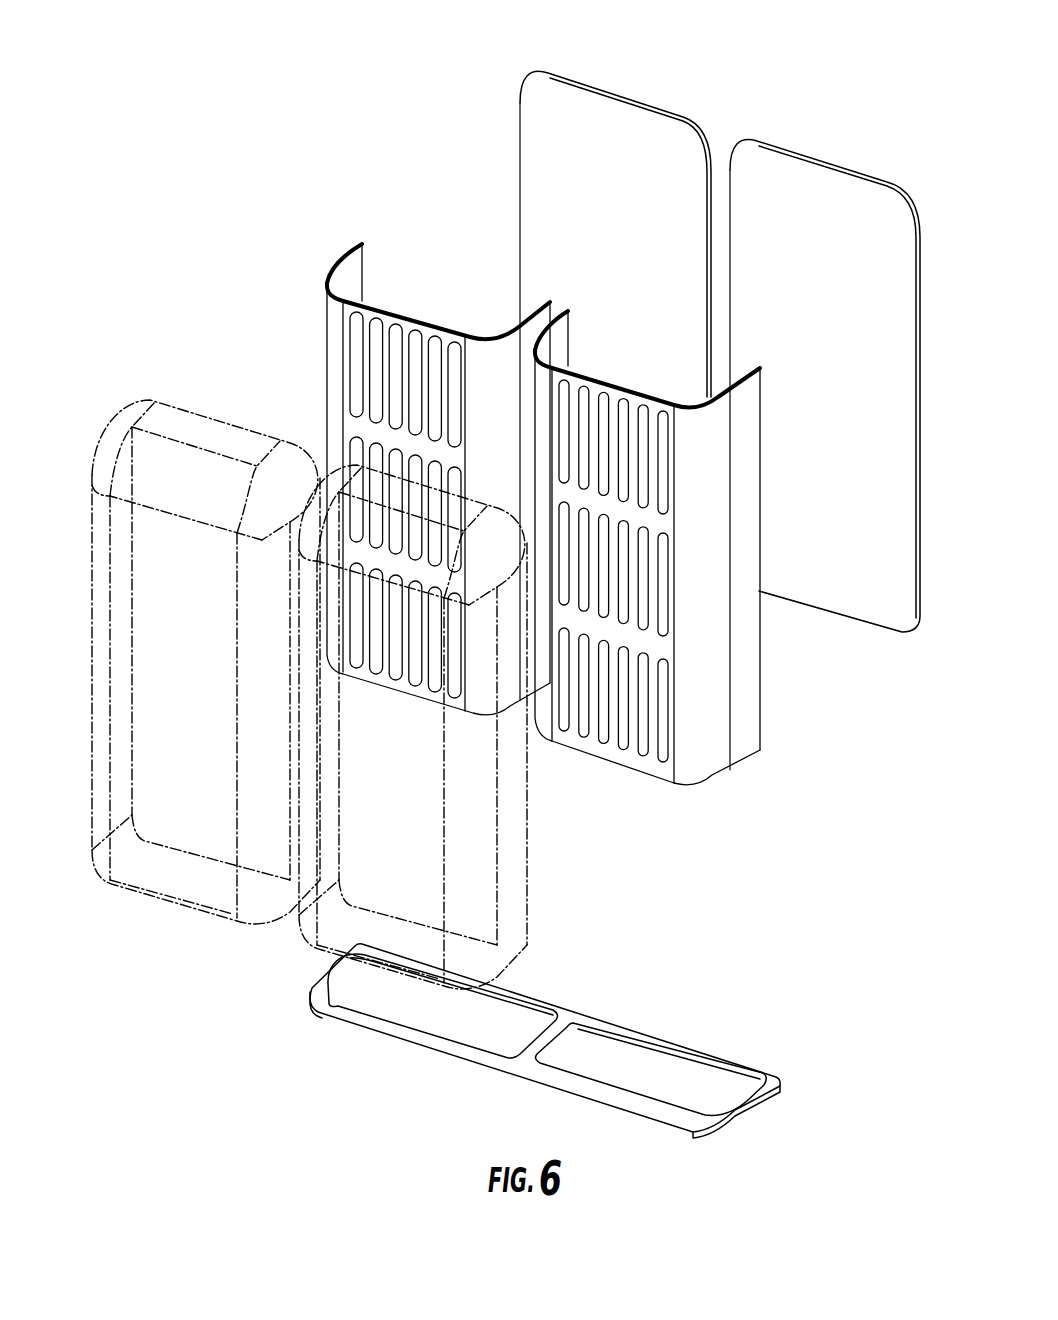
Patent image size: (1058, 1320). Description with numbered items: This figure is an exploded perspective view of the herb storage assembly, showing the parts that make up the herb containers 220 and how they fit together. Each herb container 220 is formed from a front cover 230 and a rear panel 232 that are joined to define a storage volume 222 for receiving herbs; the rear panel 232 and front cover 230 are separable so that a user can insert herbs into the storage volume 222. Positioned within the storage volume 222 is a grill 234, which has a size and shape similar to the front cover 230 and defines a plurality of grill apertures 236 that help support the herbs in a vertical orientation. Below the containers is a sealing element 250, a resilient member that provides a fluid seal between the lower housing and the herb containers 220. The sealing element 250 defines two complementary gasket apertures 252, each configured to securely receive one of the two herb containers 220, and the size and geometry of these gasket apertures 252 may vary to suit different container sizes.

The herb container 220 is at (186, 128).
The storage volume 222 is at (162, 723).
The front cover 230 is at (150, 543).
The rear panel 232 is at (897, 377).
The grill 234 is at (333, 317).
The grill aperture 236 is at (394, 354).
The sealing element 250 is at (567, 1013).
The gasket aperture 252 is at (666, 1074).